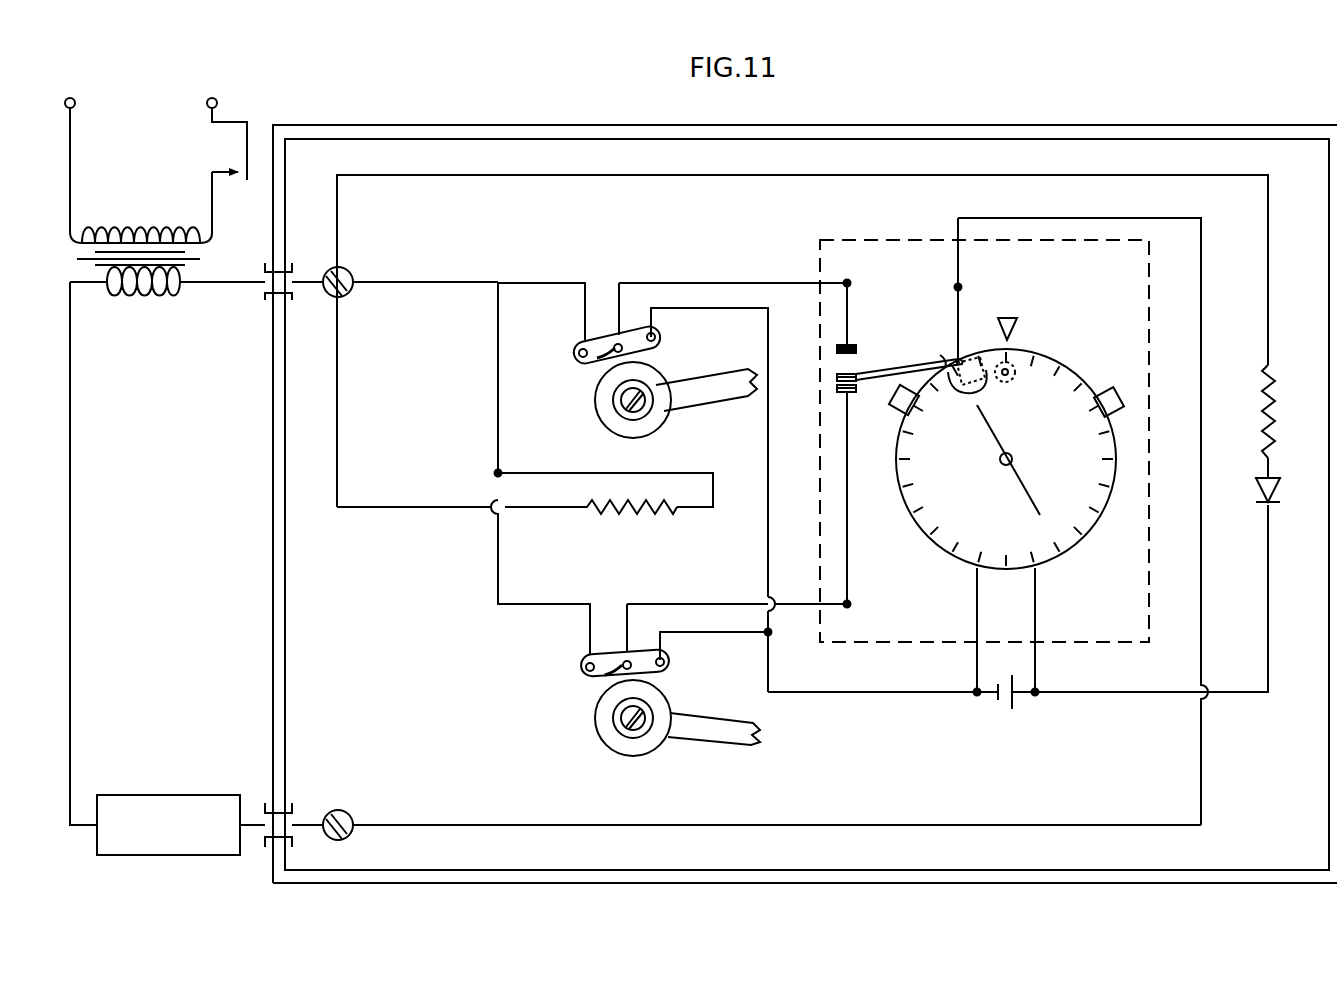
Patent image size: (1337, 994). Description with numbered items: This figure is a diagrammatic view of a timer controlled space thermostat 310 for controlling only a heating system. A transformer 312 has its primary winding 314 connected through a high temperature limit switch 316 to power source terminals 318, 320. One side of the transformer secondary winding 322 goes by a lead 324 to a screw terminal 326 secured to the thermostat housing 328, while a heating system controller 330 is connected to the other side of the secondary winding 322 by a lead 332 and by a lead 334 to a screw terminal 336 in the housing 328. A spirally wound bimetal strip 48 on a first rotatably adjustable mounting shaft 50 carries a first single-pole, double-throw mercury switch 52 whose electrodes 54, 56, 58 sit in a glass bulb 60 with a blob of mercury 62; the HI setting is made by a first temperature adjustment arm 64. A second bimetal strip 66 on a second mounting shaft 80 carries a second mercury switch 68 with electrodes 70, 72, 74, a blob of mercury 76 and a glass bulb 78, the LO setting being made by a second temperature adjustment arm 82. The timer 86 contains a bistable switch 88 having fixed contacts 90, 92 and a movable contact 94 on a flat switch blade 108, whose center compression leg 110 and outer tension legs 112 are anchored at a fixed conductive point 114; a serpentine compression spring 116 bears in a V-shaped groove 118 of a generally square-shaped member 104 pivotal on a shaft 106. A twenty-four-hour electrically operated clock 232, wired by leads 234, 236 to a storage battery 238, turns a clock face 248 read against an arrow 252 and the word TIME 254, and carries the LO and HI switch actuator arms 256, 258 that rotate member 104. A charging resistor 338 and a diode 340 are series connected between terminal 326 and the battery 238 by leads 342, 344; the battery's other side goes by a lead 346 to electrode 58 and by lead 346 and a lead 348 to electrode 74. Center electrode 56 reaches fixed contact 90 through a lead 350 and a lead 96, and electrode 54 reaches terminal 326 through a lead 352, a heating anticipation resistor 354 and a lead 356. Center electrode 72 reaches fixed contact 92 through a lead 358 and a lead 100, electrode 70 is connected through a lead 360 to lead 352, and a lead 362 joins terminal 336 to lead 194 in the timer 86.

The timer controlled space thermostat 310 is at (565, 118).
The transformer 312 is at (206, 258).
The primary winding 314 is at (142, 222).
The high temperature limit switch 316 is at (226, 170).
The power source terminal 318 is at (73, 99).
The power source terminal 320 is at (216, 99).
The transformer secondary winding 322 is at (141, 297).
The lead 324 is at (234, 288).
The screw terminal 326 is at (350, 270).
The thermostat housing 328 is at (378, 125).
The heating system controller 330 is at (192, 795).
The lead 332 is at (72, 545).
The lead 334 is at (255, 822).
The screw terminal 336 is at (338, 810).
The charging resistor 338 is at (1276, 426).
The diode 340 is at (1278, 505).
The lead 342 is at (713, 175).
The lead 344 is at (1240, 698).
The lead 346 is at (888, 693).
The lead 348 is at (740, 632).
The lead 350 is at (703, 283).
The lead 352 is at (497, 385).
The heating anticipation resistor 354 is at (622, 500).
The lead 356 is at (398, 507).
The lead 358 is at (690, 604).
The lead 360 is at (497, 540).
The lead 362 is at (650, 826).
The spirally wound bimetal strip 48 is at (612, 425).
The first rotatably adjustable mounting shaft 50 is at (617, 404).
The first single-pole, double-throw mercury switch 52 is at (678, 334).
The electrode 54 is at (578, 350).
The center electrode 56 is at (614, 345).
The electrode 58 is at (648, 334).
The glass bulb 60 is at (664, 343).
The blob of mercury 62 is at (601, 360).
The first temperature adjustment arm 64 is at (702, 393).
The second bimetal strip 66 is at (618, 748).
The second single-pole, double-throw mercury switch 68 is at (683, 657).
The electrode 70 is at (586, 665).
The center electrode 72 is at (623, 662).
The electrode 74 is at (656, 659).
The blob of mercury 76 is at (610, 676).
The glass bulb 78 is at (675, 665).
The second rotatably adjustable mounting shaft 80 is at (617, 724).
The second temperature adjustment arm 82 is at (712, 736).
The timer 86 is at (1064, 236).
The single-pole, double-throw switch 88 is at (872, 353).
The fixed contact 90 is at (838, 346).
The fixed contact 92 is at (838, 390).
The movable contact 94 is at (838, 375).
The lead 96 is at (850, 295).
The lead 100 is at (850, 530).
The generally square-shaped member 104 is at (1012, 362).
The shaft 106 is at (1006, 383).
The flat switch blade 108 is at (867, 390).
The center compression leg 110 is at (940, 360).
The outer tension legs 112 is at (880, 405).
The fixed conductive point 114 is at (975, 405).
The serpentine compression spring 116 is at (948, 362).
The V-shaped groove 118 is at (987, 365).
The lead 194 is at (955, 300).
The electrically operated clock 232 is at (1082, 557).
The lead 234 is at (970, 606).
The lead 236 is at (1040, 607).
The storage battery 238 is at (1015, 703).
The clock face 248 is at (1078, 518).
The arrow 252 is at (1020, 322).
The word TIME 254 is at (1030, 298).
The switch actuator arm 256 is at (897, 412).
The switch actuator arm 258 is at (1112, 392).